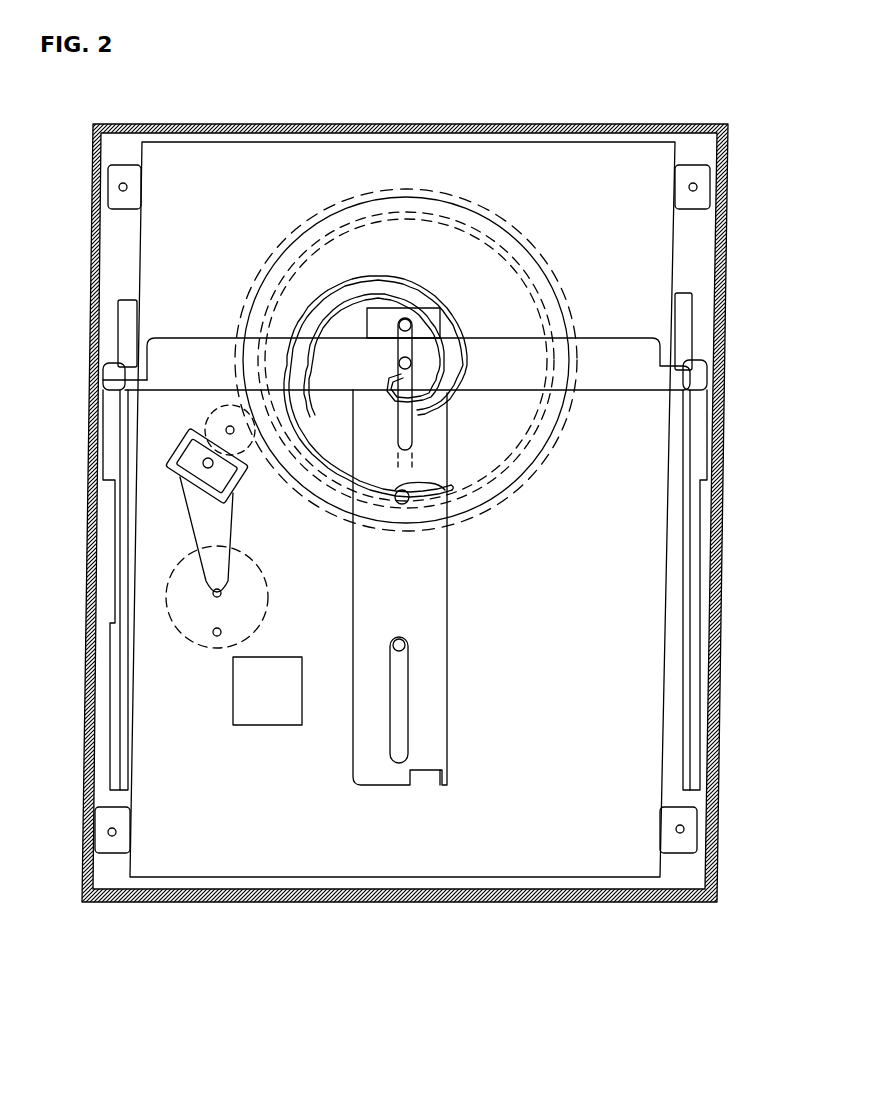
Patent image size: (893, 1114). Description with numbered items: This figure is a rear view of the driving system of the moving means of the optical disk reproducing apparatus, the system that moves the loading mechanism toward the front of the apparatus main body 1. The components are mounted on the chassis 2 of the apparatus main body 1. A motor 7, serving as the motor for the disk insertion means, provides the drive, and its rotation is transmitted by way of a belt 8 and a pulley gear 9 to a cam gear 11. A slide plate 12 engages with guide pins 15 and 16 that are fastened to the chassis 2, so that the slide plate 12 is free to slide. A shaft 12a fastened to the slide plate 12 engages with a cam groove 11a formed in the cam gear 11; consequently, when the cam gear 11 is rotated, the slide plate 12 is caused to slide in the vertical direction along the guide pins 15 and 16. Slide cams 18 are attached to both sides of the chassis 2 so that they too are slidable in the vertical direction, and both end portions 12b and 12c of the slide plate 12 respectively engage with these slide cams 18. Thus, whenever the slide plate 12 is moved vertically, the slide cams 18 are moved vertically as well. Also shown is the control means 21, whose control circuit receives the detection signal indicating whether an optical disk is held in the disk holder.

The apparatus main body 1 is at (728, 152).
The chassis 2 is at (568, 878).
The motor 7 is at (196, 645).
The belt 8 is at (233, 530).
The pulley gear 9 is at (180, 440).
The cam gear 11 is at (532, 250).
The cam groove 11a is at (357, 292).
The slide plate 12 is at (613, 337).
The shaft 12a is at (428, 500).
The end portion of slide plate 12b is at (100, 386).
The end portion of slide plate 12c is at (688, 387).
The guide pin 15 is at (410, 318).
The guide pin 16 is at (408, 640).
The slide cams 18 is at (127, 508).
The control means 21 is at (264, 726).